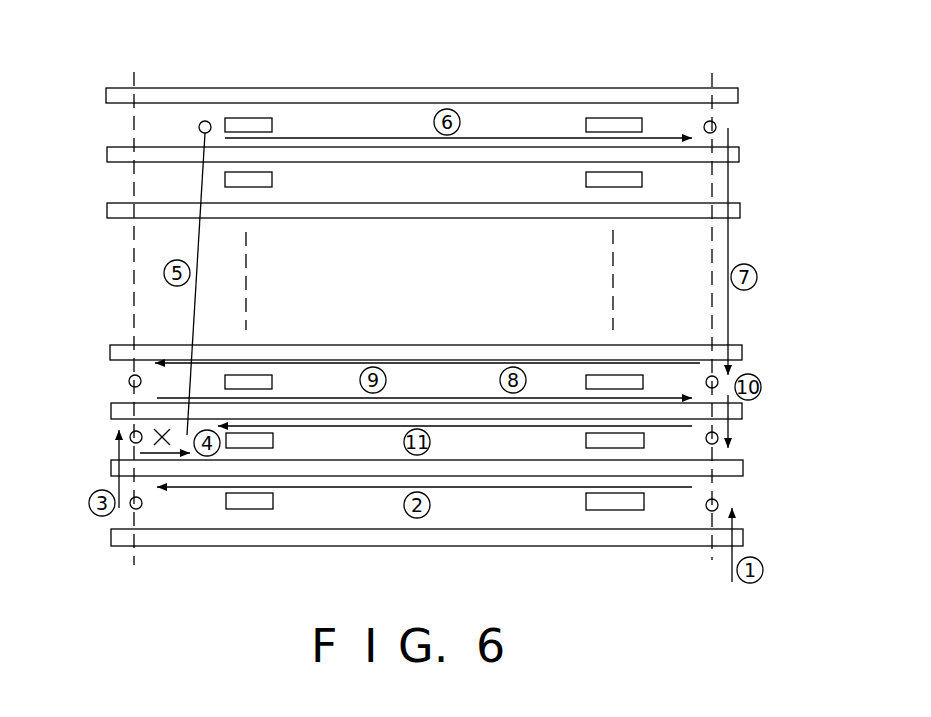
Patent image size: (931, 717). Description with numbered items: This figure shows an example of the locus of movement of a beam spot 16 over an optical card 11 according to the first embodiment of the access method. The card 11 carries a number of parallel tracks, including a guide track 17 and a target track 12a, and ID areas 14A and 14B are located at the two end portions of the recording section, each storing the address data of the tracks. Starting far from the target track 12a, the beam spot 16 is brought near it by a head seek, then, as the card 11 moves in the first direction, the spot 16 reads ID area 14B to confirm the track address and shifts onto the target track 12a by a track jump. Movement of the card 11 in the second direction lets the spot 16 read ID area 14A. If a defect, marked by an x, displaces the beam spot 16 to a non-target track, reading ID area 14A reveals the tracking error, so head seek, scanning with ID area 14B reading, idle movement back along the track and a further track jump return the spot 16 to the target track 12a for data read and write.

The optical card 11 is at (456, 88).
The ID area 14A is at (252, 116).
The ID area 14B is at (608, 116).
The guide track 17 is at (738, 95).
The target track 12a is at (747, 459).
The beam spot 16 is at (719, 504).